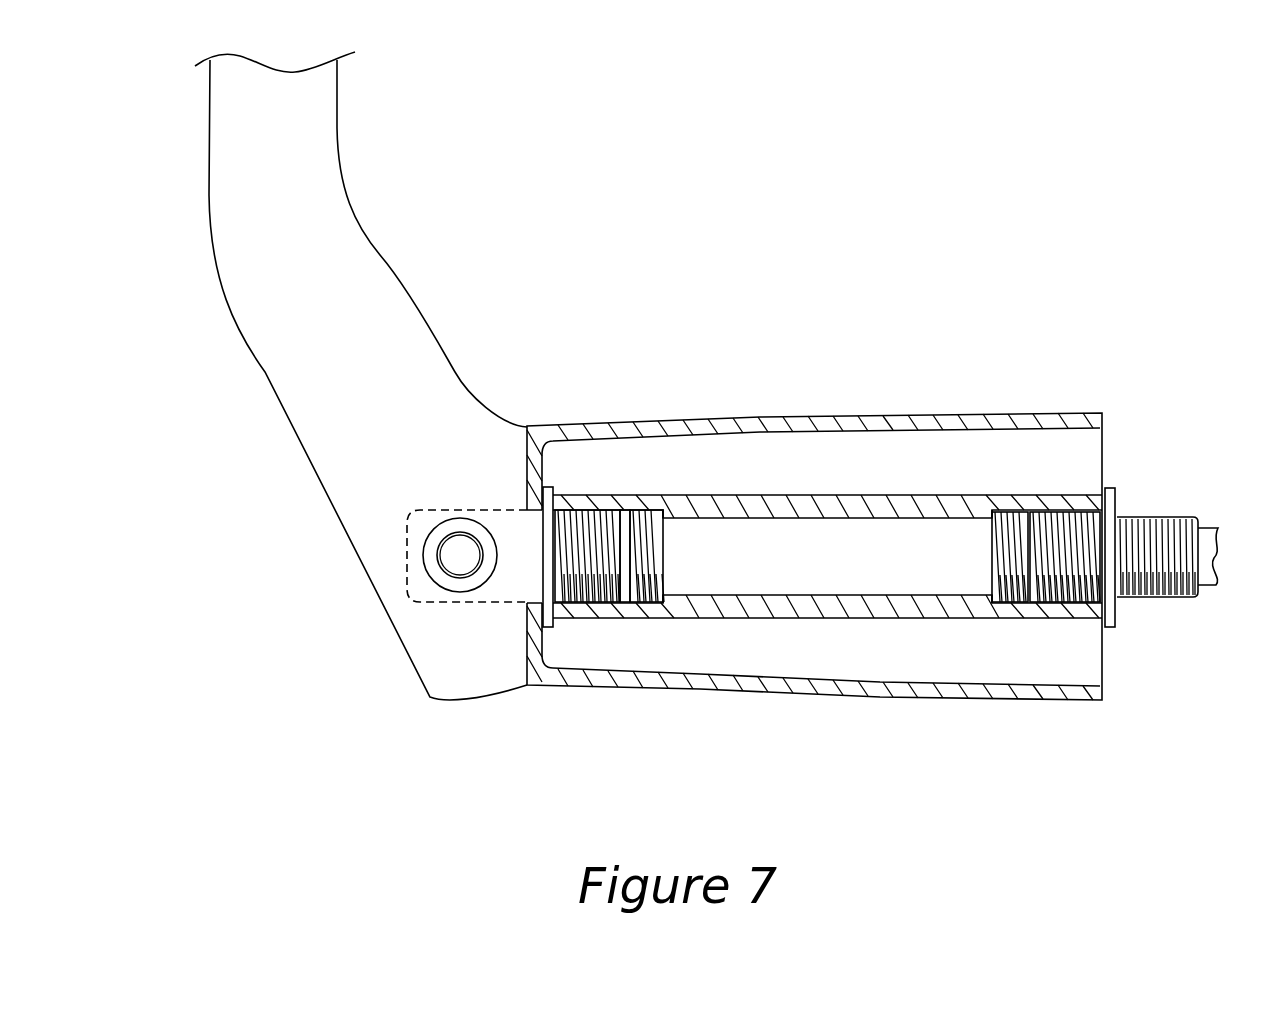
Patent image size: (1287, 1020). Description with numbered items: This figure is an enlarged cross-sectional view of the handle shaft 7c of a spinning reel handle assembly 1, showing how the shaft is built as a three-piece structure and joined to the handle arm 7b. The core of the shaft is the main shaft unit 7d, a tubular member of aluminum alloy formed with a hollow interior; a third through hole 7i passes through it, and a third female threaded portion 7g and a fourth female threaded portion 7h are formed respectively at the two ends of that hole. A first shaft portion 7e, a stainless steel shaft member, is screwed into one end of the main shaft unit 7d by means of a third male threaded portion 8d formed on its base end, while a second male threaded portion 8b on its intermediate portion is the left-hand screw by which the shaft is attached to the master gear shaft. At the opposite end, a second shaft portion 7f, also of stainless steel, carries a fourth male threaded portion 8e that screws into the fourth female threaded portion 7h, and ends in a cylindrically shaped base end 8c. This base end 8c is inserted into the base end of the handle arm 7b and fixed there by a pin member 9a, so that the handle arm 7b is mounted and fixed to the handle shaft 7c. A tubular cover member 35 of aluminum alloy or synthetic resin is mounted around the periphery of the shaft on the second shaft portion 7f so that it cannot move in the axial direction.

The handle assembly 1 is at (547, 210).
The handle arm 7b is at (352, 267).
The handle shaft 7c is at (832, 483).
The main shaft unit 7d is at (787, 613).
The first shaft portion 7e is at (1148, 606).
The second shaft portion 7f is at (595, 630).
The third female threaded portion 7g is at (1025, 520).
The fourth female threaded portion 7h is at (659, 517).
The third through hole 7i is at (727, 508).
The second male threaded portion 8b is at (1162, 517).
The base end 8c is at (477, 507).
The third male threaded portion 8d is at (1050, 520).
The fourth male threaded portion 8e is at (577, 517).
The pin member 9a is at (460, 577).
The cover member 35 is at (763, 418).